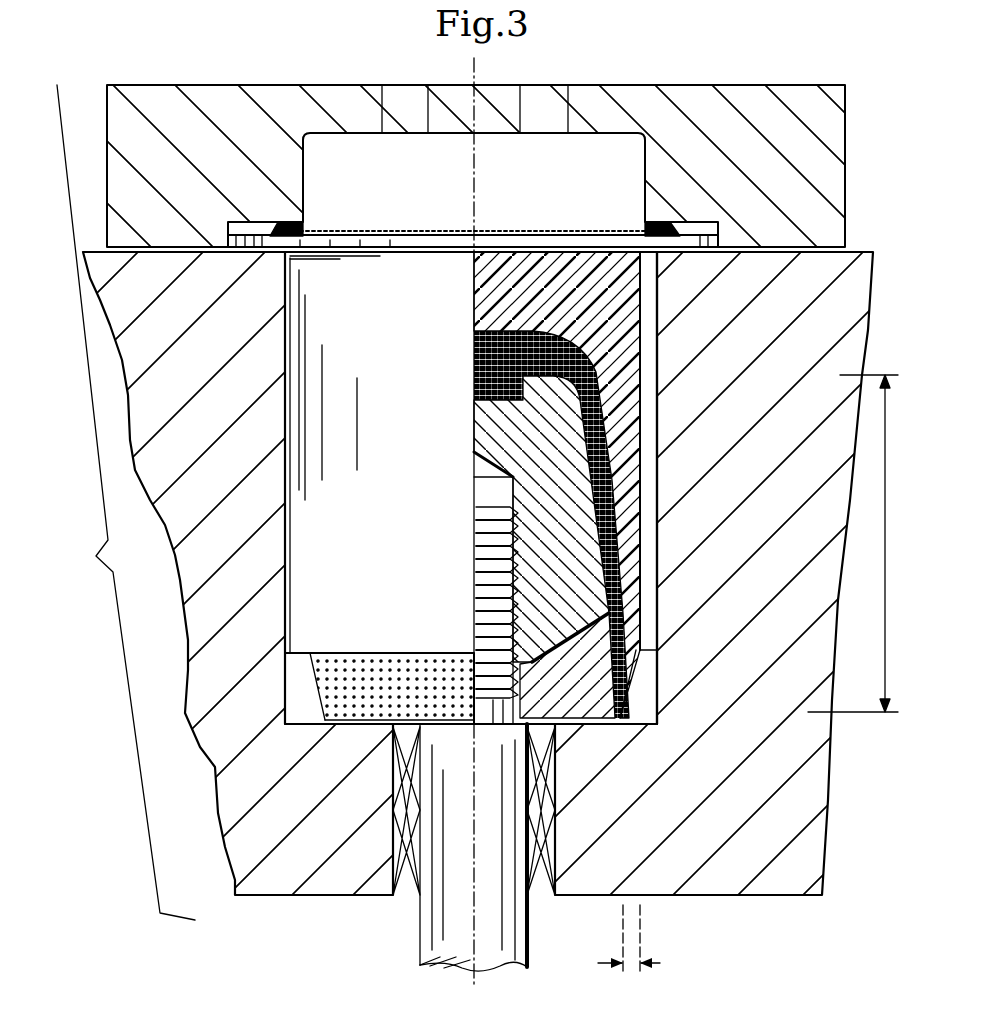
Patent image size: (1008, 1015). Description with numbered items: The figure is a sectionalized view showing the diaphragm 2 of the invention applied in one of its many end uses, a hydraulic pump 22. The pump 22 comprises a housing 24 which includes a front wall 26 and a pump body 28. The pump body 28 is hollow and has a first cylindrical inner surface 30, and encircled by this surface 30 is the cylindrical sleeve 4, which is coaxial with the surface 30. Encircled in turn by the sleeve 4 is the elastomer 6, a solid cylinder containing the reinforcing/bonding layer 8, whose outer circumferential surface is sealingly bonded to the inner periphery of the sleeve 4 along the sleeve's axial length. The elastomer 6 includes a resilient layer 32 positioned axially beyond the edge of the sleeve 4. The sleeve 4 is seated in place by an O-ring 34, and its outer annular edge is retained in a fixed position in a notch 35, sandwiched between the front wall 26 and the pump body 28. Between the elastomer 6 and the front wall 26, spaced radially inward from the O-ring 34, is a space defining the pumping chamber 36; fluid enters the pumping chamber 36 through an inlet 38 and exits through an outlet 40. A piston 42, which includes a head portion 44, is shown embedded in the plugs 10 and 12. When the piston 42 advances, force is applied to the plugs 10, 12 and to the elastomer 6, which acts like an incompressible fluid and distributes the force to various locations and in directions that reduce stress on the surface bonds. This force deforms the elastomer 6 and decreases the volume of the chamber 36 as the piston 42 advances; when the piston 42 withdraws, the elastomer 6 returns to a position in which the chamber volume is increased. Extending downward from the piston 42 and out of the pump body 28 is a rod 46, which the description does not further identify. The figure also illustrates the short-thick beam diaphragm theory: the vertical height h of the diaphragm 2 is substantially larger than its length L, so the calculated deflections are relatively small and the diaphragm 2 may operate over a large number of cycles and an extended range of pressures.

The diaphragm 2 is at (491, 509).
The sleeve 4 is at (252, 250).
The elastomer 6 is at (632, 338).
The reinforcing/bonding layer 8 is at (488, 335).
The plug 10 is at (582, 706).
The plug 12 is at (470, 436).
The hydraulic pump 22 is at (568, 44).
The housing 24 is at (126, 502).
The front wall 26 is at (485, 90).
The pump body 28 is at (182, 626).
The first cylindrical inner surface 30 is at (285, 700).
The resilient layer 32 is at (316, 724).
The O-ring 34 is at (293, 233).
The notch 35 is at (714, 233).
The pumping chamber 36 is at (474, 177).
The inlet 38 is at (384, 90).
The outlet 40 is at (566, 90).
The piston 42 is at (545, 845).
The head portion 44 is at (476, 592).
The rod 46 is at (432, 920).
The vertical height h is at (853, 543).
The length L is at (637, 941).